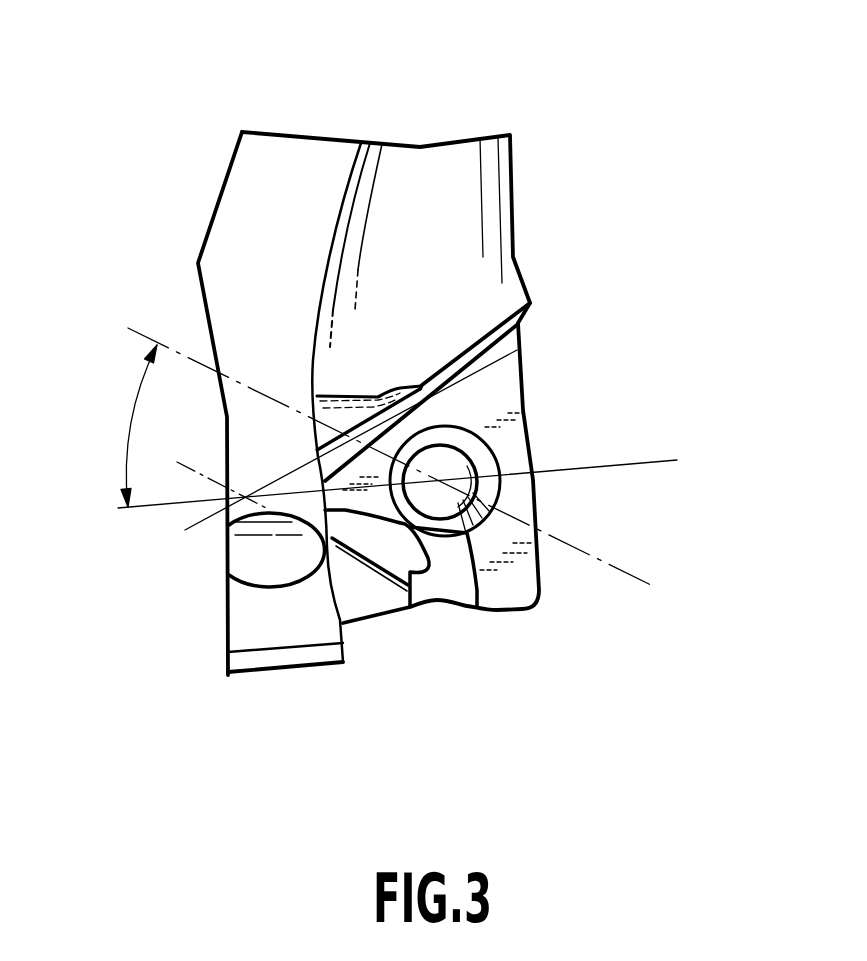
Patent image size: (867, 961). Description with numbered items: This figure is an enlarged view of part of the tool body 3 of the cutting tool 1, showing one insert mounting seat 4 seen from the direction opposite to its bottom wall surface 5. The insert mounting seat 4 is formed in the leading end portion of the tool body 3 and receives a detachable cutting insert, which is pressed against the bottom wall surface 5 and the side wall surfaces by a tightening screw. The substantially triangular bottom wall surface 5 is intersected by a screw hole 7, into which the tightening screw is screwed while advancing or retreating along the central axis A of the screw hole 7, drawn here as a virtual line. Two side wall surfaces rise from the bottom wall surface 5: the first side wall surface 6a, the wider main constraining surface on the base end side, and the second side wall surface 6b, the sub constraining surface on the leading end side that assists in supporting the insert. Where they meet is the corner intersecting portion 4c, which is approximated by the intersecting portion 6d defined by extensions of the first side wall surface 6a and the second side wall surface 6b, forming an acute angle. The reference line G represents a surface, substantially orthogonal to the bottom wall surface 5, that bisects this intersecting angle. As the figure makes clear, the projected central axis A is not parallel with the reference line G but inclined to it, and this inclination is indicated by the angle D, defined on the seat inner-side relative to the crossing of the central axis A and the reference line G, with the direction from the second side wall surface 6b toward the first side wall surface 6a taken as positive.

The cutting tool 1 is at (293, 167).
The tool body 3 is at (435, 187).
The insert mounting seat 4 is at (485, 555).
The corner intersecting portion 4c is at (342, 459).
The bottom wall surface 5 is at (510, 585).
The first side wall surface 6a is at (373, 423).
The second side wall surface 6b is at (398, 568).
The intersecting portion 6d is at (243, 499).
The screw hole 7 is at (452, 448).
The angle D is at (132, 426).
The reference line G is at (637, 462).
The central axis A is at (637, 577).